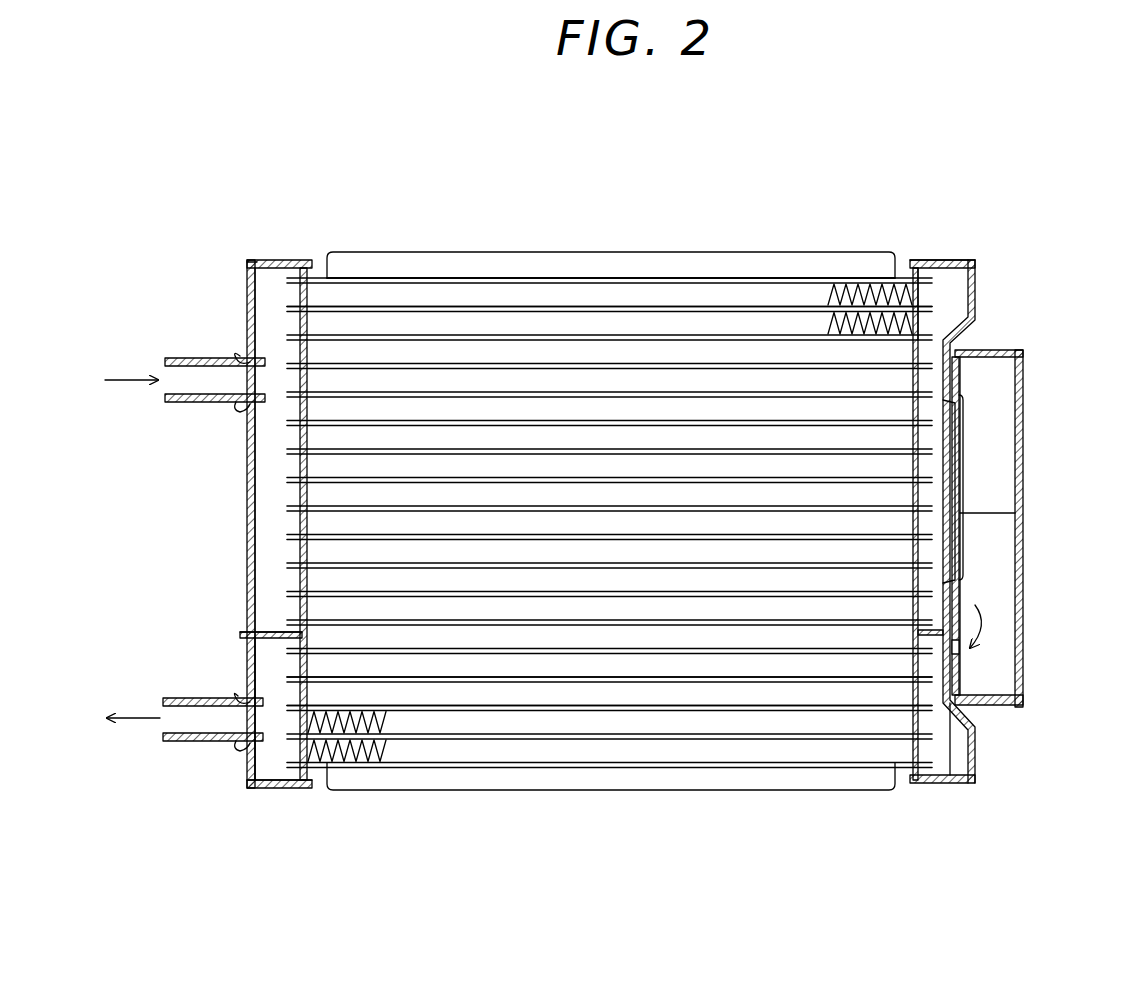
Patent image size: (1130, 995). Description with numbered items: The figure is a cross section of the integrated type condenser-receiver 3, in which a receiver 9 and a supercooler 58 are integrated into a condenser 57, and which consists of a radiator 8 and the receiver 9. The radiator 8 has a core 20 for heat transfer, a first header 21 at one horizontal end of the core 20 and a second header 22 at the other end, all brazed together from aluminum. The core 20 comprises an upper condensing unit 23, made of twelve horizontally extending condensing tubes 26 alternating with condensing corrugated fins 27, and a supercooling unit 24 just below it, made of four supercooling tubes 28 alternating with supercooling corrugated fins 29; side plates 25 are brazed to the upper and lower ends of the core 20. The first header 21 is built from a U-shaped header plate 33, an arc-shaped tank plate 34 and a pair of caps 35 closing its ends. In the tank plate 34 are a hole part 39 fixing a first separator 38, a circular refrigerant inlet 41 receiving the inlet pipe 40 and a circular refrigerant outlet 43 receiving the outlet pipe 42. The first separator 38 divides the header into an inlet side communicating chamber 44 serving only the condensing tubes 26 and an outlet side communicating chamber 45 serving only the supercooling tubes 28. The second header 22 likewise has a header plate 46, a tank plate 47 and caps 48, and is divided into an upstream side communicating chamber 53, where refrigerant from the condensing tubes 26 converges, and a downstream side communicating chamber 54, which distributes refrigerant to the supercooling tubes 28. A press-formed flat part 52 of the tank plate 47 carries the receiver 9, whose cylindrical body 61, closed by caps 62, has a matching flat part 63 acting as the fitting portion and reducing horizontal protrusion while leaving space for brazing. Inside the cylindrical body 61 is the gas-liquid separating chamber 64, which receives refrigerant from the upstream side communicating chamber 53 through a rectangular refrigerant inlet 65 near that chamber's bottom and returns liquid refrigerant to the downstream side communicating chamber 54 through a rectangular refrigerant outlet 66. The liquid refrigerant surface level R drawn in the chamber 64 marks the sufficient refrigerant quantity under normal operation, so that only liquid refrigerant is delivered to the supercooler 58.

The integrated type condenser-receiver 3 is at (256, 240).
The radiator 8 is at (297, 233).
The receiver 9 is at (1031, 520).
The core 20 is at (368, 295).
The first header 21 is at (283, 522).
The second header 22 is at (916, 502).
The condensing unit 23 is at (585, 346).
The supercooling unit 24 is at (596, 722).
The side plates 25 is at (722, 260).
The condensing tubes 26 is at (653, 306).
The condensing corrugated fins 27 is at (830, 292).
The supercooling tubes 28 is at (535, 681).
The supercooling corrugated fins 29 is at (385, 748).
The header plate 33 is at (305, 347).
The tank plate 34 is at (248, 318).
The caps 35 is at (272, 262).
The first separator 38 is at (285, 628).
The hole part 39 is at (240, 634).
The inlet pipe 40 is at (205, 403).
The refrigerant inlet 41 is at (240, 406).
The outlet pipe 42 is at (178, 698).
The refrigerant outlet 43 is at (248, 740).
The inlet side communicating chamber 44 is at (265, 500).
The outlet side communicating chamber 45 is at (265, 765).
The header plate 46 is at (905, 688).
The tank plate 47 is at (975, 280).
The caps 48 is at (940, 260).
The flat part 52 is at (965, 553).
The upstream side communicating chamber 53 is at (965, 300).
The downstream side communicating chamber 54 is at (945, 752).
The condenser 57 is at (962, 258).
The supercooler 58 is at (238, 792).
The cylindrical body 61 is at (1025, 468).
The caps 62 is at (1000, 352).
The flat part 63 is at (945, 405).
The gas-liquid separating chamber 64 is at (1000, 382).
The refrigerant inlet 65 is at (960, 625).
The refrigerant outlet 66 is at (962, 668).
The liquid refrigerant surface level R is at (1018, 508).